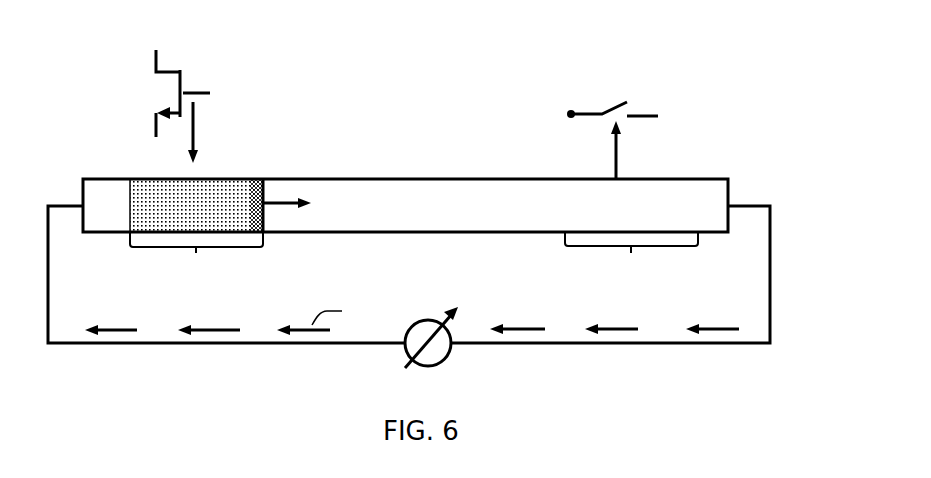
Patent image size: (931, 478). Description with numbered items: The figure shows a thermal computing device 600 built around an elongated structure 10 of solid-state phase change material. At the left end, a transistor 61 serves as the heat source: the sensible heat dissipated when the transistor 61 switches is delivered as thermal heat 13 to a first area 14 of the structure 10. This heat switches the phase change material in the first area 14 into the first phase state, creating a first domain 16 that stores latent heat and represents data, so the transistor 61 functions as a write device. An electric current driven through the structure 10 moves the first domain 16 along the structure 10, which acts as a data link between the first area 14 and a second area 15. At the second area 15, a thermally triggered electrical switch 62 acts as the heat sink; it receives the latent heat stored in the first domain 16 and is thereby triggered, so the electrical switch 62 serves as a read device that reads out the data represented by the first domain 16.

The thermal computing device 600 is at (710, 444).
The structure 10 is at (405, 232).
The first domain 16 is at (230, 178).
The first area 14 is at (196, 263).
The second area 15 is at (631, 258).
The thermal heat 13 is at (196, 135).
The transistor 61 is at (183, 74).
The electrical switch 62 is at (612, 104).